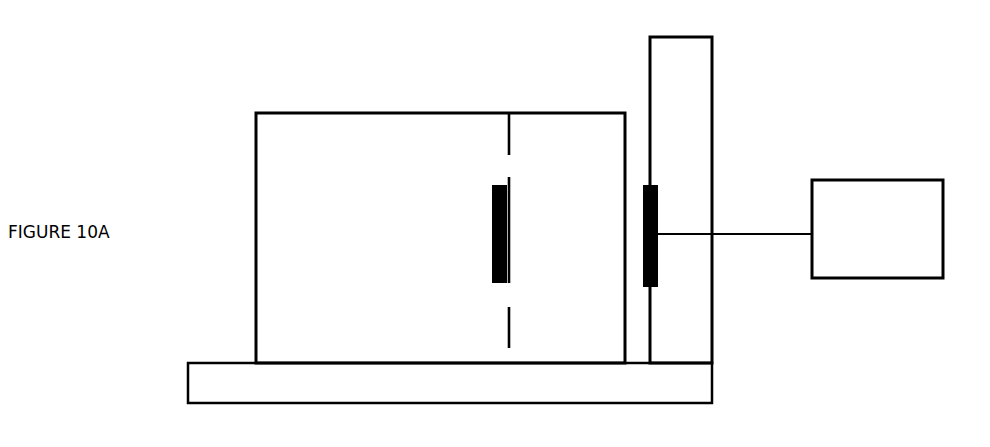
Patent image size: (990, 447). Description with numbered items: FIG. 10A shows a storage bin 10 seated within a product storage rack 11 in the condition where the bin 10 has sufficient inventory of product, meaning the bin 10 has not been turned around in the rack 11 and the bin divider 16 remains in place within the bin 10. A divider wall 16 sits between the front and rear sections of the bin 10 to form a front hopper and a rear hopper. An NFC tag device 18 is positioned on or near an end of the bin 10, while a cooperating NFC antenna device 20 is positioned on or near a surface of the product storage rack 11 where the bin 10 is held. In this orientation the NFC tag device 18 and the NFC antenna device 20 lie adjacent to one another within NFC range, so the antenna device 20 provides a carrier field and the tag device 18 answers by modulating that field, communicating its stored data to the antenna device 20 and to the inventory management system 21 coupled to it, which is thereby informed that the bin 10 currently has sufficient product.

The bin 10 is at (238, 198).
The product storage rack 11 is at (733, 160).
The divider wall 16 is at (507, 152).
The NFC tag device 18 is at (509, 222).
The NFC antenna device 20 is at (660, 270).
The inventory management system 21 is at (855, 176).